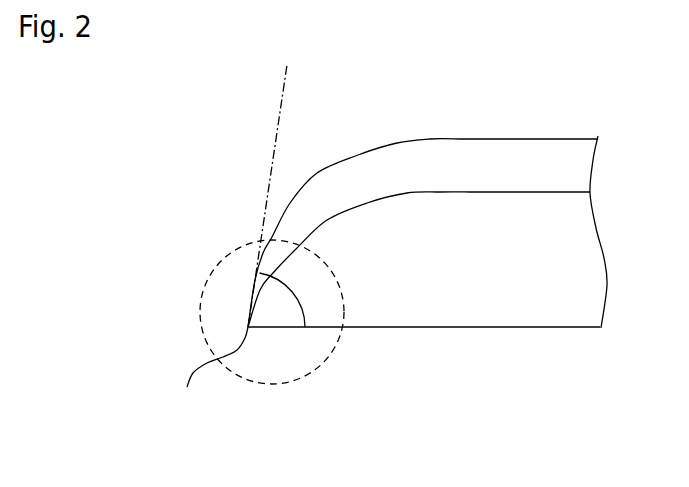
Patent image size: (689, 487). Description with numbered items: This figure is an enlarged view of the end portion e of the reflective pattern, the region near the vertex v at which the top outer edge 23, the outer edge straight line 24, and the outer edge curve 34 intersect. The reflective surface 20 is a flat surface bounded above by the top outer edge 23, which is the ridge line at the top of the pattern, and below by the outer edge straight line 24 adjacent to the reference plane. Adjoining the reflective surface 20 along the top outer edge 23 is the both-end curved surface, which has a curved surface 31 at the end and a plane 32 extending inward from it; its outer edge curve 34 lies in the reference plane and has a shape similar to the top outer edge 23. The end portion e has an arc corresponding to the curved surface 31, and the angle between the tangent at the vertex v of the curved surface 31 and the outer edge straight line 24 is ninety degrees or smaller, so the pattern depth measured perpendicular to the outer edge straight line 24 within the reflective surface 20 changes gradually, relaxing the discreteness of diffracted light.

The reflective surface 20 is at (571, 298).
The top outer edge 23 is at (573, 193).
The outer edge straight line 24 is at (477, 328).
The curved surface 31 is at (357, 176).
The plane 32 is at (480, 175).
The outer edge curve 34 is at (519, 139).
The end portion e is at (263, 388).
The vertex v is at (213, 375).